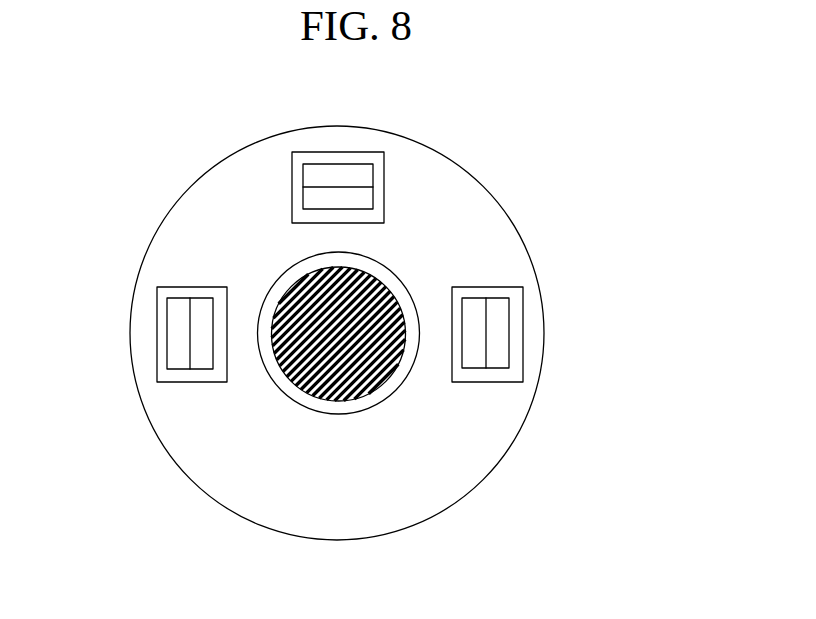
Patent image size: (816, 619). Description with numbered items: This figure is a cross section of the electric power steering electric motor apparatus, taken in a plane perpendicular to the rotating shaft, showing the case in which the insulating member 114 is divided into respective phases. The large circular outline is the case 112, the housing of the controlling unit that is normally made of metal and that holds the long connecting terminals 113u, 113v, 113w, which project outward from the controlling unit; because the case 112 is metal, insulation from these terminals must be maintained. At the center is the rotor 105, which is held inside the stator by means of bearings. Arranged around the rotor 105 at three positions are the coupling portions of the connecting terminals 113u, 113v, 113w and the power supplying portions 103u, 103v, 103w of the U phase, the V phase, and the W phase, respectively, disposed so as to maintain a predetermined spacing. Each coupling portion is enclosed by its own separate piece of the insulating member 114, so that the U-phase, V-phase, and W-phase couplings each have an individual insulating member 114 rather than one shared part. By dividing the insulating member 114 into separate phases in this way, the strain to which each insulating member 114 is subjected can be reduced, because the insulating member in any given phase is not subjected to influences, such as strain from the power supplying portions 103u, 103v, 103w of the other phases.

The case 112 is at (391, 333).
The rotor 105 is at (456, 412).
The insulating member 114 is at (347, 259).
The power supplying portion of the U phase 103u is at (136, 289).
The power supplying portion of the V phase 103v is at (468, 146).
The power supplying portion of the W phase 103w is at (550, 309).
The connecting terminal of the U phase 113u is at (135, 265).
The connecting terminal of the V phase 113v is at (268, 133).
The connecting terminal of the W phase 113w is at (557, 285).